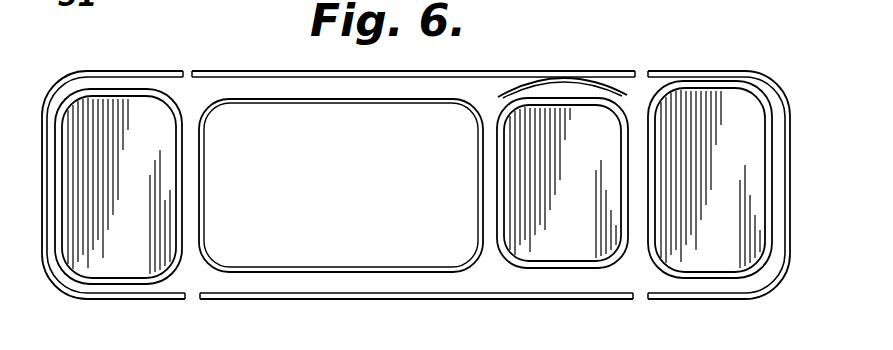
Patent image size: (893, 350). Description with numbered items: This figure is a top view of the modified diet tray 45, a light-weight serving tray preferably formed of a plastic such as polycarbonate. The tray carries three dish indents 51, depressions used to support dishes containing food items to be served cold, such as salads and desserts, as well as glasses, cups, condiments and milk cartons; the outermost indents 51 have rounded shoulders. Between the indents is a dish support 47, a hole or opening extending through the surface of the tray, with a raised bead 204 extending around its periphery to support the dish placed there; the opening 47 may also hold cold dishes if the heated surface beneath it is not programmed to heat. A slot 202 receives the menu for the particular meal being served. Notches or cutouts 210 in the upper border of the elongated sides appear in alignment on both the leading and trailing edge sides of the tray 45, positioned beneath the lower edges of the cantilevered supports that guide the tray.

The modified diet tray 45 is at (640, 38).
The notches 210 is at (186, 71).
The slot 202 is at (552, 61).
The raised bead 204 is at (311, 103).
The dish support 47 is at (402, 104).
The tray indents 51 is at (149, 201).